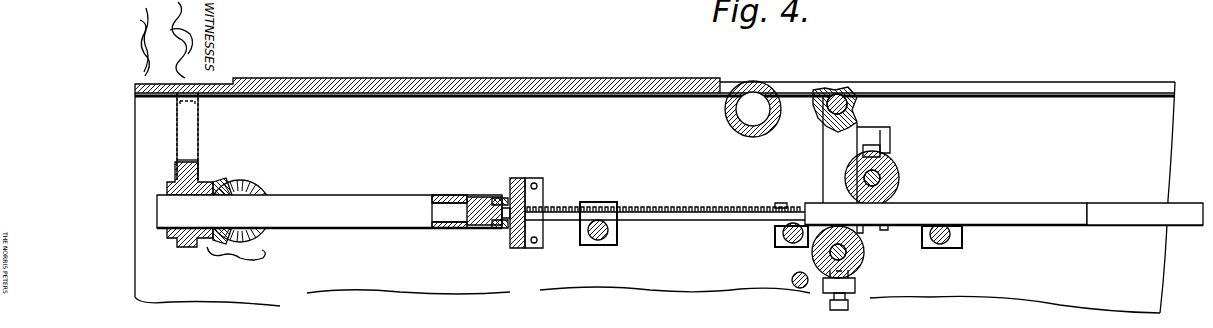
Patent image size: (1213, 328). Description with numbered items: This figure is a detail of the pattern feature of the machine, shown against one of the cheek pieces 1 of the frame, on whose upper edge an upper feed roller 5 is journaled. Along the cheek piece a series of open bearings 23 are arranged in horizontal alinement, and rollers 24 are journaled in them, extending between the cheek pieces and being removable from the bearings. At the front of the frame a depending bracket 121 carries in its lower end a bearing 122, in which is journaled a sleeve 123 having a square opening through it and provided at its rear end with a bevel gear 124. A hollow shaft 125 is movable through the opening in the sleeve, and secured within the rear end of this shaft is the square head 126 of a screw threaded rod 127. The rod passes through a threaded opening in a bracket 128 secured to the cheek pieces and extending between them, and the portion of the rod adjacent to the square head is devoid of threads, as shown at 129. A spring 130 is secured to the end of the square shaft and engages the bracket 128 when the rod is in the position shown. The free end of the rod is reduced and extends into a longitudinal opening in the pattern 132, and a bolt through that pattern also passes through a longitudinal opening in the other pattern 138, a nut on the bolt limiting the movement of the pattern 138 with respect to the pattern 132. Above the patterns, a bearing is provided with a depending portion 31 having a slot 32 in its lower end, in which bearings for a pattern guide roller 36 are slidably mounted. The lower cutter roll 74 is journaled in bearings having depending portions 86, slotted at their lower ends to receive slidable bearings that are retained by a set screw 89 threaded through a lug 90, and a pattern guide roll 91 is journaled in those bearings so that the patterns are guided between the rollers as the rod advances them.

The cheek pieces 1 is at (655, 195).
The upper feed rollers 5 is at (742, 132).
The open bearings 23 is at (658, 264).
The rollers 24 is at (589, 245).
The depending portions 31 is at (890, 137).
The slots 32 is at (887, 149).
The pattern guide roller 36 is at (900, 176).
The lower cutter roll 74 is at (850, 88).
The depending portions 86 is at (830, 165).
The set screw 89 is at (832, 305).
The lug 90 is at (856, 281).
The pattern guide roll 91 is at (863, 247).
The depending bracket 121 is at (253, 129).
The bearing 122 is at (203, 279).
The sleeve 123 is at (172, 192).
The bevel gear 124 is at (253, 163).
The hollow shaft 125 is at (360, 184).
The square head 126 is at (492, 189).
The screw threaded rod 127 is at (595, 174).
The bracket 128 is at (524, 176).
The unthreaded portion 129 is at (500, 232).
The spring 130 is at (525, 168).
The pattern 132 is at (1004, 214).
The pattern 138 is at (1145, 214).